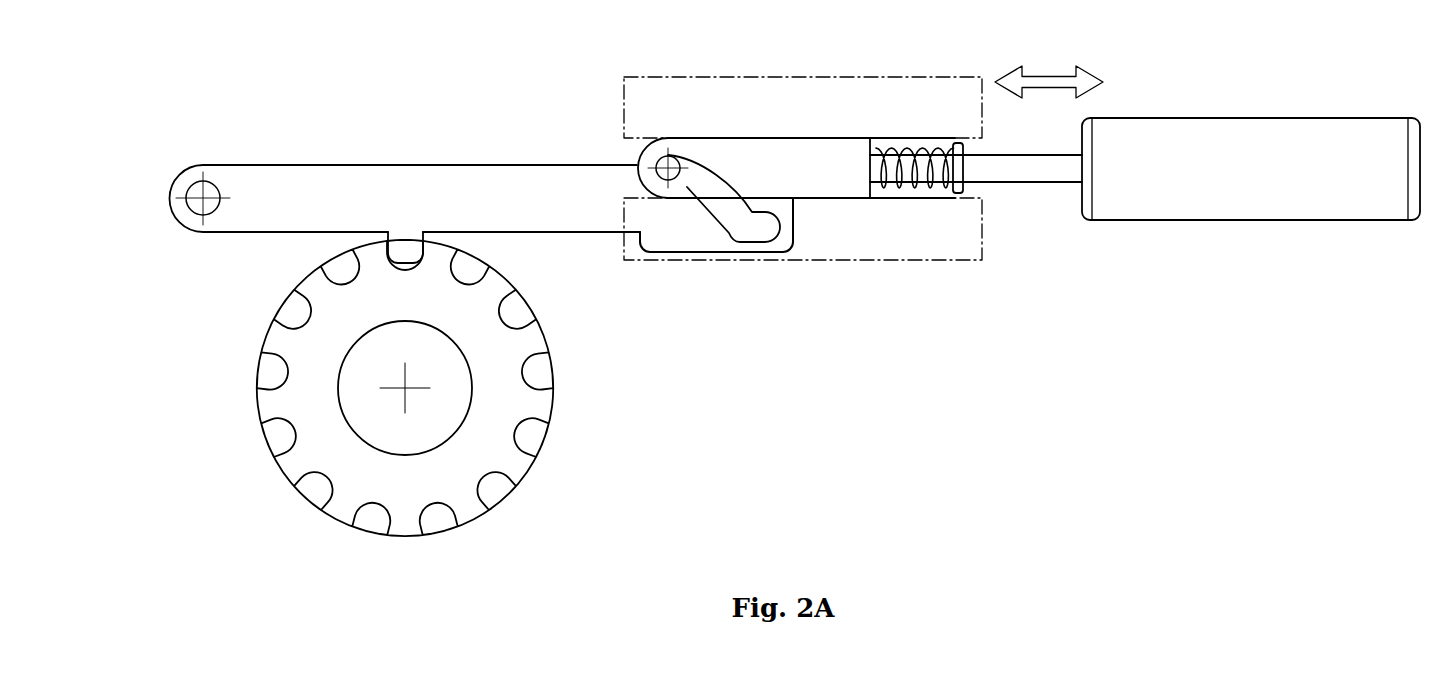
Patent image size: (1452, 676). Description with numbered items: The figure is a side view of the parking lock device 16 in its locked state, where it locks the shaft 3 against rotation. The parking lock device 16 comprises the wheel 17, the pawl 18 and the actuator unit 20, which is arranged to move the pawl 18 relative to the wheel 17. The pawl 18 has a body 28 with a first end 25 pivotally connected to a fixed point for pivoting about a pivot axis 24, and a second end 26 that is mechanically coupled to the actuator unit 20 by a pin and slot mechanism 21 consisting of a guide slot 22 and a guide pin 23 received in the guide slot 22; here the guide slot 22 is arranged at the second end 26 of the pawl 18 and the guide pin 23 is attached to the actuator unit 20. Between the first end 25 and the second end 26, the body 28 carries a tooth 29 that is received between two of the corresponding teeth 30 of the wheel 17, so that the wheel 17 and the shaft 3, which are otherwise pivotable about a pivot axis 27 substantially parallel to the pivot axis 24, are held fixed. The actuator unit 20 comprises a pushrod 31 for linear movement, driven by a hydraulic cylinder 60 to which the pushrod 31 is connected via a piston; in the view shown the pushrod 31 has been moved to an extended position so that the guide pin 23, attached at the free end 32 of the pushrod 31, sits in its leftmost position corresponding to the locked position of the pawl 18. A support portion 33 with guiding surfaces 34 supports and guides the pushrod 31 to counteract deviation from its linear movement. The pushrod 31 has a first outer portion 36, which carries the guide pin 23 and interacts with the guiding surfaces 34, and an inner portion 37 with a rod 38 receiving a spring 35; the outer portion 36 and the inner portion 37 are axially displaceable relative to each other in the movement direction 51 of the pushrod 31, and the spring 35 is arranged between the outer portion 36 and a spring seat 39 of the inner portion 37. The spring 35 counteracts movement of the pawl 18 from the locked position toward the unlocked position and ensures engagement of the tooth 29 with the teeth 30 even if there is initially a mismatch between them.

The shaft 3 is at (370, 407).
The parking lock device 16 is at (610, 92).
The wheel 17 is at (515, 403).
The pawl 18 is at (523, 197).
The actuator unit 20 is at (1145, 111).
The pin and slot mechanism 21 is at (746, 206).
The guide slot 22 is at (742, 240).
The guide pin 23 is at (650, 145).
The pivot axis 24 is at (196, 182).
The first end 25 is at (160, 178).
The second end 26 is at (717, 130).
The pivot axis 27 is at (400, 385).
The body 28 is at (332, 197).
The tooth 29 is at (405, 243).
The teeth 30 is at (513, 270).
The pushrod 31 is at (903, 137).
The free end 32 is at (618, 145).
The support portion 33 is at (813, 223).
The guiding surfaces 34 is at (763, 197).
The spring 35 is at (927, 200).
The first outer portion 36 is at (803, 165).
The inner portion 37 is at (925, 137).
The rod 38 is at (893, 200).
The spring seat 39 is at (955, 207).
The movement direction 51 is at (1047, 72).
The hydraulic cylinder 60 is at (1262, 175).